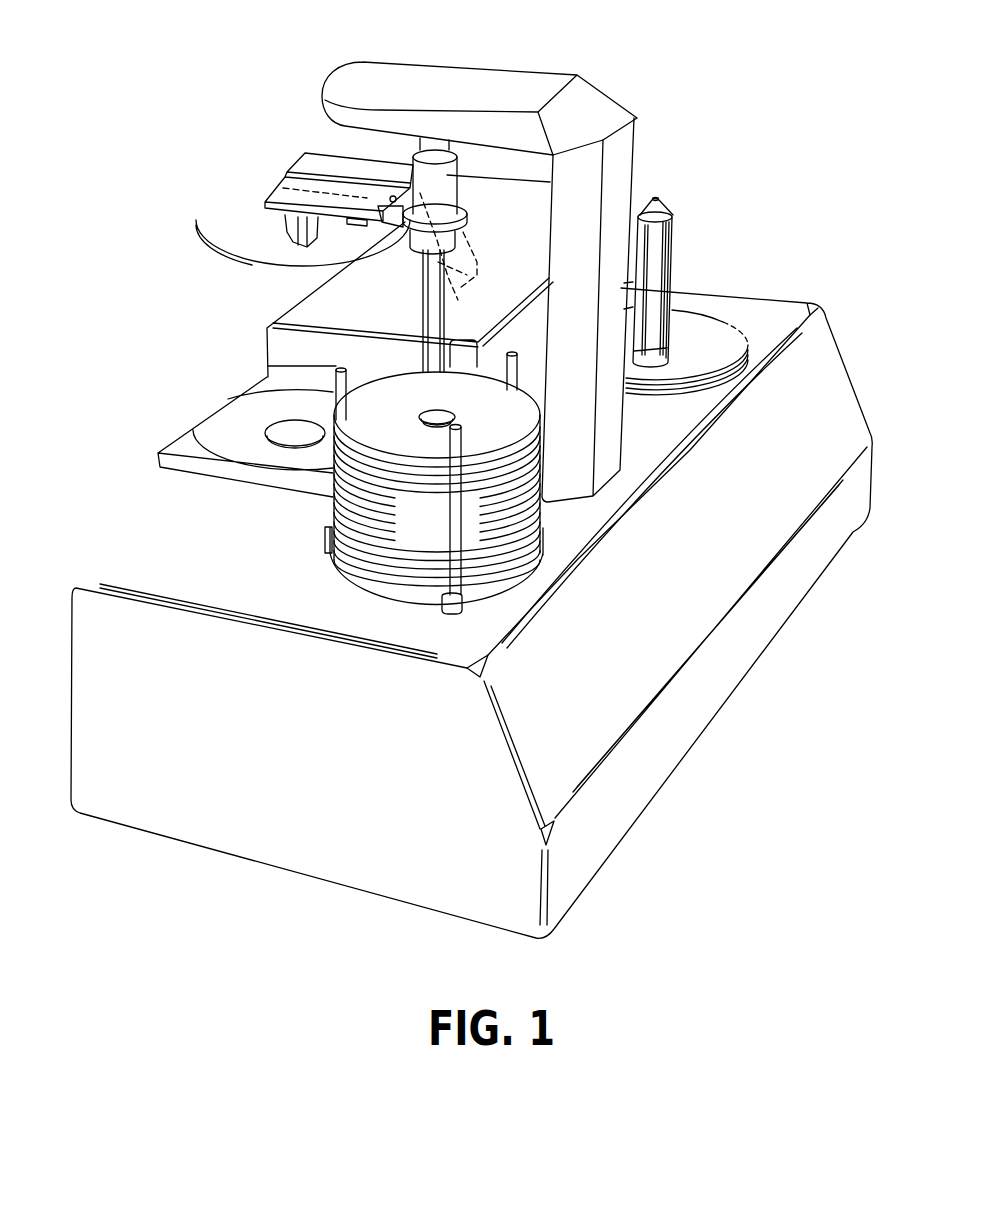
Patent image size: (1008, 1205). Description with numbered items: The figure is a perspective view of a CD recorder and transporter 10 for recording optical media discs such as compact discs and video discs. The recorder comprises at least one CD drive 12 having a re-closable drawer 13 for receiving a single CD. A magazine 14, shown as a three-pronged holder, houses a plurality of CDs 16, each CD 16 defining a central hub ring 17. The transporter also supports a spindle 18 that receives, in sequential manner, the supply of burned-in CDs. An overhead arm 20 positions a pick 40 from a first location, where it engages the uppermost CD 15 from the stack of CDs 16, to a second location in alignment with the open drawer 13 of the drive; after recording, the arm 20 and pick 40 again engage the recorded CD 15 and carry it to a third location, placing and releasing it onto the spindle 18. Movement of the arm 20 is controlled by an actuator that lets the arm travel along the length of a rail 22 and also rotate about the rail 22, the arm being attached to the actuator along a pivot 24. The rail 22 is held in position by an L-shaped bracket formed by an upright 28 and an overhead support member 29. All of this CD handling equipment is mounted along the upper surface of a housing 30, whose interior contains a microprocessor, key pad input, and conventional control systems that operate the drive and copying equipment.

The CD recorder and transporter 10 is at (727, 183).
The CD drive 12 is at (294, 312).
The re-closable drawer 13 is at (183, 445).
The magazine 14 is at (455, 604).
The uppermost CD 15 is at (213, 270).
The CDs 16 is at (498, 513).
The central hub ring 17 is at (404, 397).
The spindle 18 is at (660, 268).
The overhead arm 20 is at (291, 170).
The rail 22 is at (423, 312).
The pivot 24 is at (378, 208).
The upright 28 is at (622, 150).
The overhead support member 29 is at (541, 75).
The housing 30 is at (147, 820).
The pick 40 is at (275, 231).